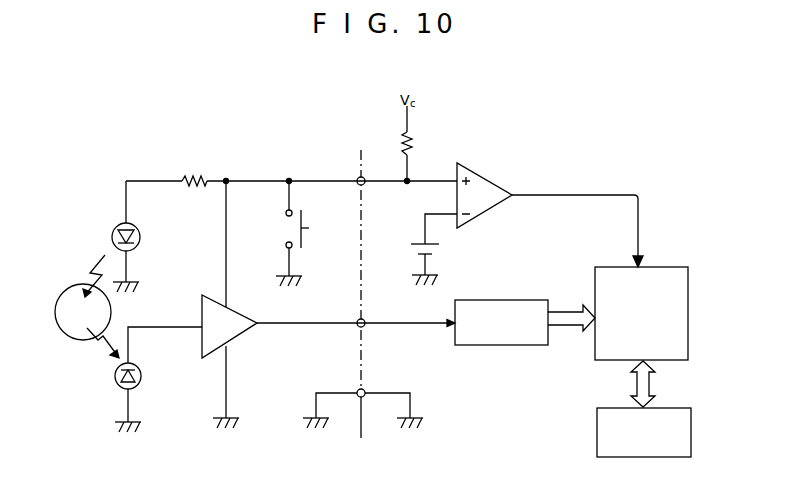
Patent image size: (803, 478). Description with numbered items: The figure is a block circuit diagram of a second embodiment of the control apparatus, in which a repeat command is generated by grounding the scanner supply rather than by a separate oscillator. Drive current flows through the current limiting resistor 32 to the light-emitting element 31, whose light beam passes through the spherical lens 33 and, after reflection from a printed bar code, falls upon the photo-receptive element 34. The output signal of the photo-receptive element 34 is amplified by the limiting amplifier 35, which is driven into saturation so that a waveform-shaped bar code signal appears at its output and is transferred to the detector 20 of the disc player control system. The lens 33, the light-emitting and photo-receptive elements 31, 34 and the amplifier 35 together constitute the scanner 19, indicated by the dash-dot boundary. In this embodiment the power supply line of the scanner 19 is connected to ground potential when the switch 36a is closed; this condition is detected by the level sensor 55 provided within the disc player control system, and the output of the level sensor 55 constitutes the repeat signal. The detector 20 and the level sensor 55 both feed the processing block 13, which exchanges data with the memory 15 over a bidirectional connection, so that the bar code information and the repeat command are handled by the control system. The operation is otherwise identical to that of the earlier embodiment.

The scanner 19 is at (301, 105).
The light-emitting element 31 is at (118, 226).
The current limiting resistor 32 is at (205, 161).
The spherical lens 33 is at (73, 292).
The photo-receptive element 34 is at (141, 375).
The limiting amplifier 35 is at (244, 337).
The switch 36a is at (289, 225).
The level sensor 55 is at (494, 207).
The detector 20 is at (498, 347).
The CPU 13 is at (609, 267).
The memory 15 is at (597, 412).